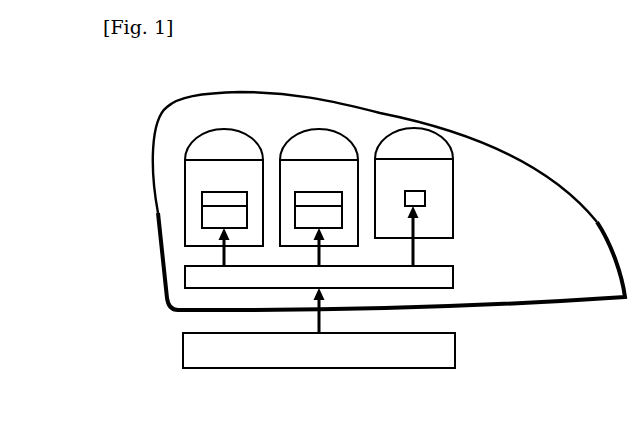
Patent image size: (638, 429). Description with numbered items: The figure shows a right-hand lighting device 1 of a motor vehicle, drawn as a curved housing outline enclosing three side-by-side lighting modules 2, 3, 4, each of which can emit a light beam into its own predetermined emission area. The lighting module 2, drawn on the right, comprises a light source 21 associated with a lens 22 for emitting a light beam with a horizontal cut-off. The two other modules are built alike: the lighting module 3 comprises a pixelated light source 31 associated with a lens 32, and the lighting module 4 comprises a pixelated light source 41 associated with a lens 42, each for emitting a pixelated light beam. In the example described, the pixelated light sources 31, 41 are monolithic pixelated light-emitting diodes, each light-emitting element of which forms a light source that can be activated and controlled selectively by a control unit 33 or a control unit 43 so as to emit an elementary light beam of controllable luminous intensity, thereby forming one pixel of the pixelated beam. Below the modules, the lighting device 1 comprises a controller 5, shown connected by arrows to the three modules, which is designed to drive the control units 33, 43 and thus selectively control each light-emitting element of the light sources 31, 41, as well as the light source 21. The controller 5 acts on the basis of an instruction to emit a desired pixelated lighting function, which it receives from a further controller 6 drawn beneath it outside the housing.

The lighting device 1 is at (575, 136).
The lighting module 2 is at (462, 174).
The light source 21 is at (427, 197).
The lens 22 is at (447, 140).
The lighting module 3 is at (343, 164).
The pixelated light source 31 is at (308, 191).
The lens 32 is at (318, 128).
The control unit 33 is at (359, 162).
The lighting module 4 is at (185, 195).
The pixelated light source 41 is at (203, 192).
The lens 42 is at (223, 129).
The control unit 43 is at (202, 228).
The controller 5 is at (453, 278).
The controller 6 is at (430, 368).